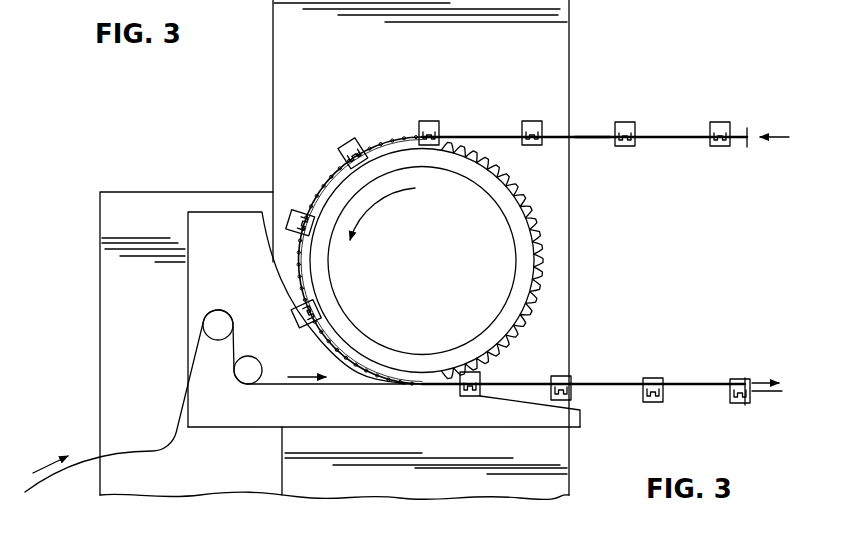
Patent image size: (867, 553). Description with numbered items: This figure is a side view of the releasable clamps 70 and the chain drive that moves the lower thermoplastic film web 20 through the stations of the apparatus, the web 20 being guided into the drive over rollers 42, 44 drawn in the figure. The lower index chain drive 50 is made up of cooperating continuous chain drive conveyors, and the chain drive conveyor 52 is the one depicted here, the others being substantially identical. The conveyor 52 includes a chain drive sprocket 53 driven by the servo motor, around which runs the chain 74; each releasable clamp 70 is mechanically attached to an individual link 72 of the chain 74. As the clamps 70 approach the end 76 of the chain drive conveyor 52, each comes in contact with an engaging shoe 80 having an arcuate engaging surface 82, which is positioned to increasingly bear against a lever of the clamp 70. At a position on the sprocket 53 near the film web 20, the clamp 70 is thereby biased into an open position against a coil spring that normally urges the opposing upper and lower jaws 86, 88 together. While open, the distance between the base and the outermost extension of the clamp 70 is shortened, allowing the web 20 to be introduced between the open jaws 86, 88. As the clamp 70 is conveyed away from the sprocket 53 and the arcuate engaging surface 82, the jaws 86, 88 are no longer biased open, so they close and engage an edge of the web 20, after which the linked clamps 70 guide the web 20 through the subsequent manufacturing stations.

The lower thermoplastic film web 20 is at (25, 492).
The guide roller 42 is at (213, 325).
The guide roller 44 is at (241, 375).
The lower index chain drive 50 is at (628, 80).
The chain drive conveyor 52 is at (665, 190).
The chain drive sprocket 53 is at (544, 266).
The releasable clamp 70 is at (652, 402).
The link 72 is at (677, 384).
The chain 74 is at (593, 143).
The end of the chain drive conveyor 76 is at (369, 124).
The engaging shoe 80 is at (220, 240).
The arcuate engaging surface 82 is at (619, 122).
The upper jaw 86 is at (481, 373).
The lower jaw 88 is at (463, 396).